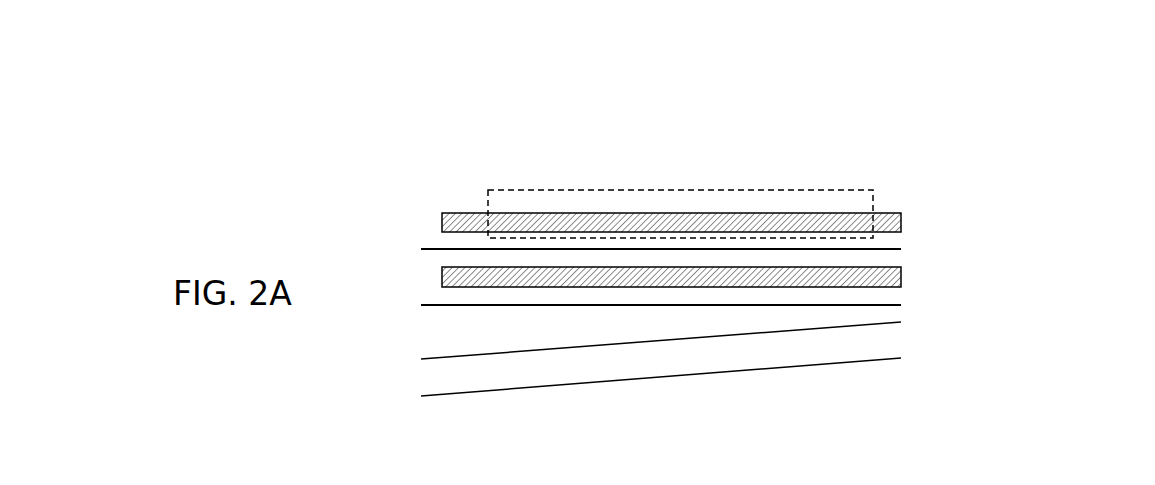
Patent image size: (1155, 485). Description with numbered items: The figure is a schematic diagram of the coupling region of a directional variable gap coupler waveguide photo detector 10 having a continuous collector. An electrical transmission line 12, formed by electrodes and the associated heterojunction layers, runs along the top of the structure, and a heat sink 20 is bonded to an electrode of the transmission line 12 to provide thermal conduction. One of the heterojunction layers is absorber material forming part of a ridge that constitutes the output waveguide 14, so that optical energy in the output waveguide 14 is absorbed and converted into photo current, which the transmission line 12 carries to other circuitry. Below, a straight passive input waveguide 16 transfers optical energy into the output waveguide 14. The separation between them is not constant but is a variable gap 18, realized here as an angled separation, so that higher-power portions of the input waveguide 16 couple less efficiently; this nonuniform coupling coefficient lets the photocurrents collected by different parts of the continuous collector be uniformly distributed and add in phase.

The optical element / display assembly 10 is at (573, 116).
The electrical transmission line 12 is at (905, 257).
The output waveguide 14 is at (416, 262).
The passive input waveguide 16 is at (790, 364).
The variable gap 18 is at (434, 328).
The heat sink 20 is at (759, 184).